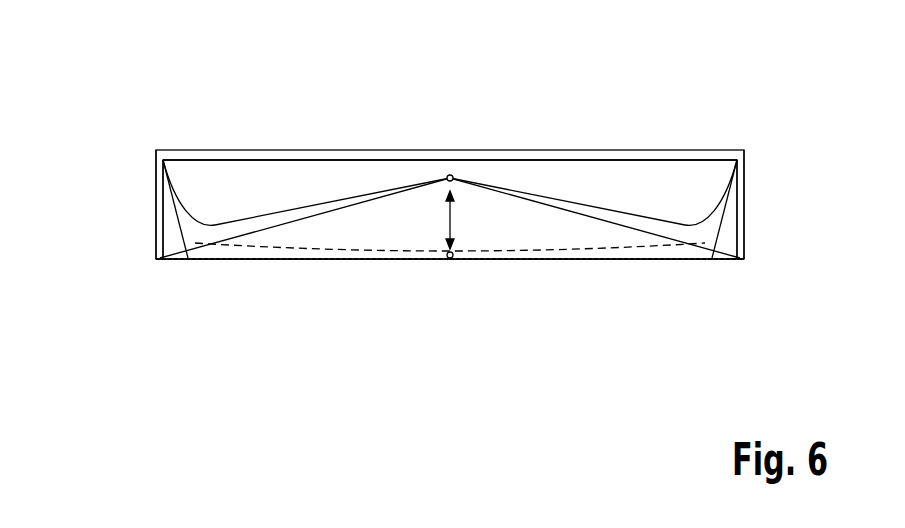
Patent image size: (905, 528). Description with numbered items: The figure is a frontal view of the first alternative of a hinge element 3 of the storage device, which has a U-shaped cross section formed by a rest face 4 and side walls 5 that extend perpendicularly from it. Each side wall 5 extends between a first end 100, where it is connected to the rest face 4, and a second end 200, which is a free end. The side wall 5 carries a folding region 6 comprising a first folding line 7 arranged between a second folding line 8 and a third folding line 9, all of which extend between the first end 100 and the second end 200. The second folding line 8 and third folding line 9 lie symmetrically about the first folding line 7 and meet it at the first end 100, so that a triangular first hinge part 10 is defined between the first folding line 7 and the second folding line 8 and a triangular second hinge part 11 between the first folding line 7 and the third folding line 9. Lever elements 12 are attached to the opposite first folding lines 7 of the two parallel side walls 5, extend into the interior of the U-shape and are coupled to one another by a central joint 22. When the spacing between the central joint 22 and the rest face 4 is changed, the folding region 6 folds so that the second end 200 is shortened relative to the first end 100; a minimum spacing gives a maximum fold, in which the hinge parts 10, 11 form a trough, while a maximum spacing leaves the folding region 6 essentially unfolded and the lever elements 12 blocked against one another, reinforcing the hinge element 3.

The hinge element 3 is at (723, 80).
The rest face 4 is at (533, 151).
The side wall 5 is at (155, 168).
The folding region 6 is at (156, 240).
The first folding line 7 is at (184, 228).
The second folding line 8 is at (742, 210).
The third folding line 9 is at (158, 226).
The first hinge part 10 is at (730, 248).
The second hinge part 11 is at (170, 250).
The lever element 12 is at (269, 218).
The central joint 22 is at (450, 175).
The first end 100 is at (163, 140).
The second end 200 is at (153, 265).